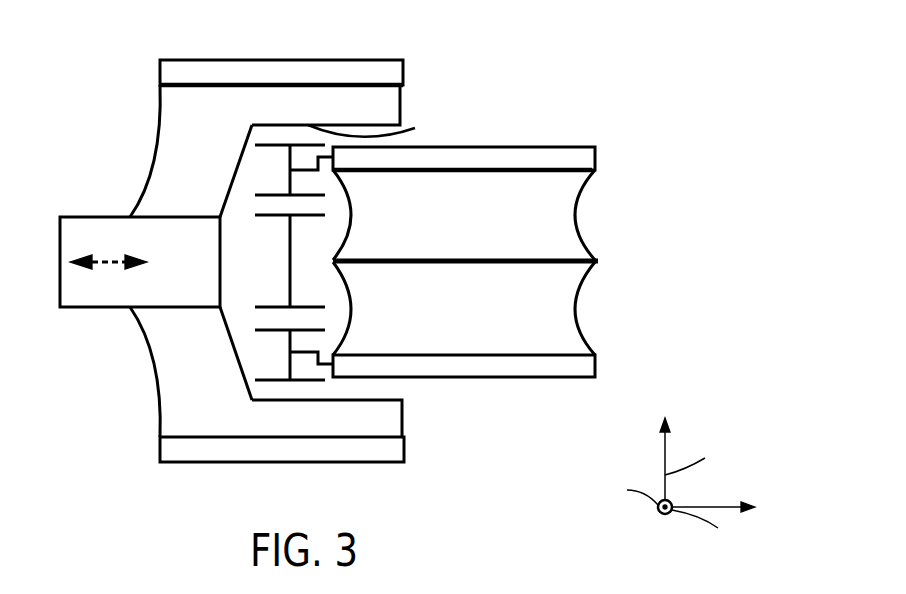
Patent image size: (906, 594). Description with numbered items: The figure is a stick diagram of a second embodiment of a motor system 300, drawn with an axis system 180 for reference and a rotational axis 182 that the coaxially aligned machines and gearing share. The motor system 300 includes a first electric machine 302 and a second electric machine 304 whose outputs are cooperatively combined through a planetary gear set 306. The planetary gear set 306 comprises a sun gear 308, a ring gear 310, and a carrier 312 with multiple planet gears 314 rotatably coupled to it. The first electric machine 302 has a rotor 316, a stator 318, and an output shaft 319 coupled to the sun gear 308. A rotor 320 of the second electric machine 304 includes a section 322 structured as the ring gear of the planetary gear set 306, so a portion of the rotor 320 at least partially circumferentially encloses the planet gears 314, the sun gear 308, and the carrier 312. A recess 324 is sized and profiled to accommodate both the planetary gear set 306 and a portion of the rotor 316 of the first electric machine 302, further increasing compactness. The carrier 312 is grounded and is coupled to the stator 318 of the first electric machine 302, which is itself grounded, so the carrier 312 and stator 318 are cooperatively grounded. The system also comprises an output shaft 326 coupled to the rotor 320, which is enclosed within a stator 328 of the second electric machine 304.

The motor system 300 is at (726, 57).
The first electric machine 302 is at (631, 118).
The second electric machine 304 is at (76, 51).
The planetary gear set 306 is at (249, 256).
The sun gear 308 is at (293, 222).
The ring gear 310 is at (379, 130).
The carrier 312 is at (327, 366).
The planet gears 314 is at (288, 342).
The rotor 316 is at (577, 208).
The stator 318 is at (596, 152).
The output shaft 319 is at (327, 263).
The rotor 320 is at (158, 128).
The section 322 is at (328, 105).
The recess 324 is at (408, 386).
The output shaft 326 is at (76, 217).
The stator 328 is at (173, 71).
The axis system 180 is at (746, 454).
The rotational axis 182 is at (98, 260).